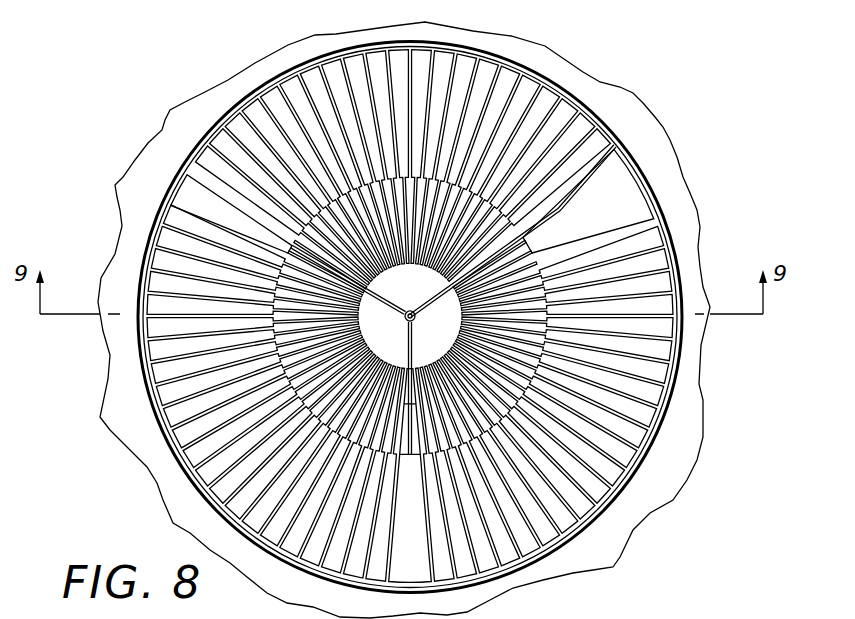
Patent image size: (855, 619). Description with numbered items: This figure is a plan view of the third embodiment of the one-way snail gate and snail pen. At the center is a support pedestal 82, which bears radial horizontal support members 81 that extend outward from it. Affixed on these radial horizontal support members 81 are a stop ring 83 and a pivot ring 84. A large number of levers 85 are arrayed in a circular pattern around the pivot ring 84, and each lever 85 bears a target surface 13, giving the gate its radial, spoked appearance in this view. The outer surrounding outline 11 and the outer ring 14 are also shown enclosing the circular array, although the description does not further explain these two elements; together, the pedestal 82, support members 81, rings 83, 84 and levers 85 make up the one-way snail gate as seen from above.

The sheet/blank 11 is at (636, 110).
The target surface 13 is at (616, 166).
The outer ring 14 is at (614, 144).
The radial horizontal support members 81 is at (446, 294).
The support pedestal 82 is at (406, 321).
The stop ring 83 is at (660, 357).
The pivot ring 84 is at (555, 384).
The levers 85 is at (560, 207).